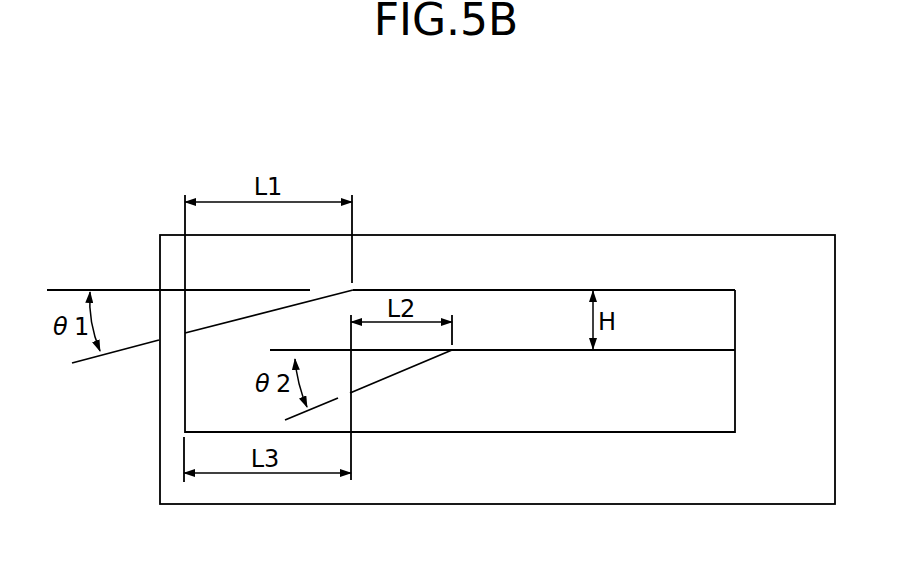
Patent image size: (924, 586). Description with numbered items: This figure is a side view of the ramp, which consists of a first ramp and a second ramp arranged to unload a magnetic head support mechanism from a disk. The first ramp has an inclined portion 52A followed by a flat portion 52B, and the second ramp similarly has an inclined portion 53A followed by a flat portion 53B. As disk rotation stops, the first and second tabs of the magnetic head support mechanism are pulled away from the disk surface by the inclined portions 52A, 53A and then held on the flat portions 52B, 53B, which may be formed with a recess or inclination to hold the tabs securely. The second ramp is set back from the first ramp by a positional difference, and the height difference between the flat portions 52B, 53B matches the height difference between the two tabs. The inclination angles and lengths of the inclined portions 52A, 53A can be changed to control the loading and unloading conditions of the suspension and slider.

The inclined portion 52A is at (227, 322).
The flat portion 52B is at (463, 289).
The inclined portion 53A is at (387, 376).
The flat portion 53B is at (660, 350).